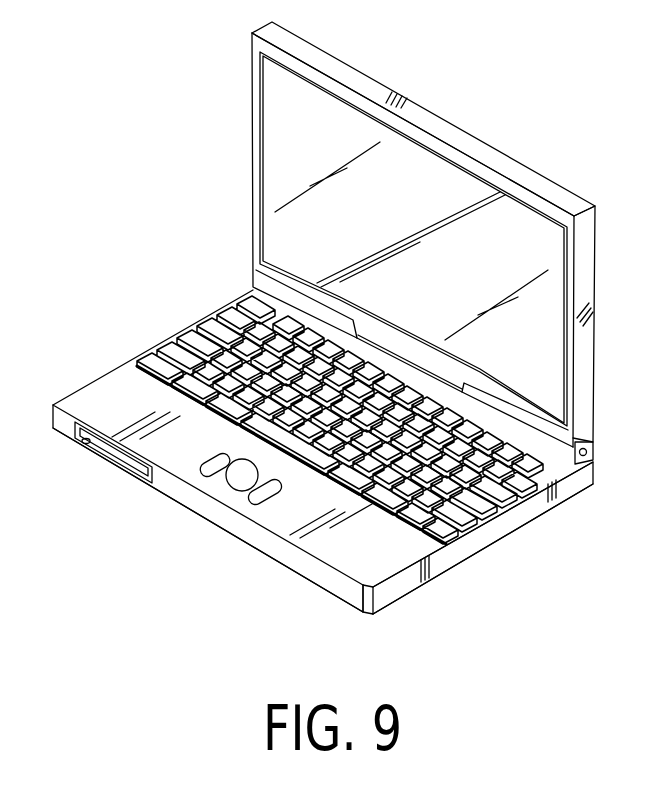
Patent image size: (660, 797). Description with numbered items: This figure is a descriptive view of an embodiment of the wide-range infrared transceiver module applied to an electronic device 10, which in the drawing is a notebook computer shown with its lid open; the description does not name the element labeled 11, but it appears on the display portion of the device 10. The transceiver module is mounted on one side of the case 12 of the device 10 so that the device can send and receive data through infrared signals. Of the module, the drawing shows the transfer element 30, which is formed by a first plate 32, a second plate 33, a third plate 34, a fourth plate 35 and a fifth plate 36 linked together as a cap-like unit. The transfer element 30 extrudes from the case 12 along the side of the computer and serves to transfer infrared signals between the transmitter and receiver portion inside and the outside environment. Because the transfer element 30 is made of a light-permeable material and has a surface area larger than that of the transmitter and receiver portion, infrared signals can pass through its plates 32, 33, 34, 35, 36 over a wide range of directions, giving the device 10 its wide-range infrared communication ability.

The electronic device 10 is at (454, 91).
The display panel 11 is at (272, 145).
The case 12 is at (338, 545).
The transfer element 30 is at (493, 553).
The first plate 32 is at (367, 600).
The second plate 33 is at (382, 600).
The third plate 34 is at (596, 470).
The fourth plate 35 is at (505, 505).
The fifth plate 36 is at (447, 577).